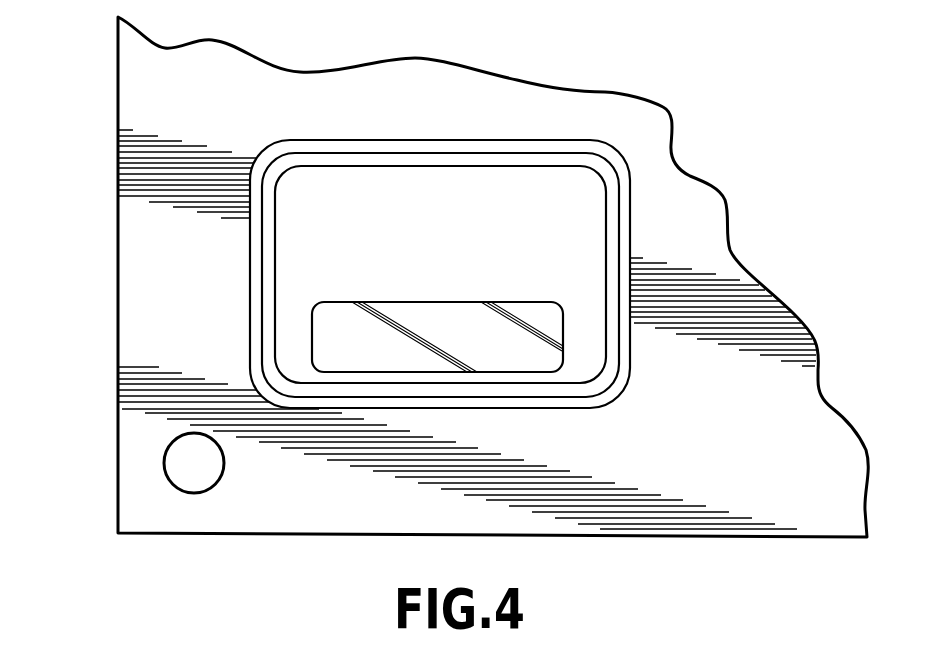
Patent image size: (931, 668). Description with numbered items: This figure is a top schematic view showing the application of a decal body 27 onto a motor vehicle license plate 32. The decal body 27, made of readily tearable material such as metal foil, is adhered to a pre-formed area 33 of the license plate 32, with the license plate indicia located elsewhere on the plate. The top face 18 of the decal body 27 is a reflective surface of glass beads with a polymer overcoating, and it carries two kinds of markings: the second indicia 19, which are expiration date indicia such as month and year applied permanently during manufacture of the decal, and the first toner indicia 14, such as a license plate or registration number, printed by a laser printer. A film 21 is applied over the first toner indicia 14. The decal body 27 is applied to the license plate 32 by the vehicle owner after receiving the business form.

The first toner indicia 14 is at (457, 318).
The top face 18 is at (585, 204).
The second indicia 19 is at (283, 224).
The film 21 is at (543, 361).
The decal body 27 is at (270, 316).
The license plate 32 is at (309, 505).
The pre-formed area 33 is at (625, 354).